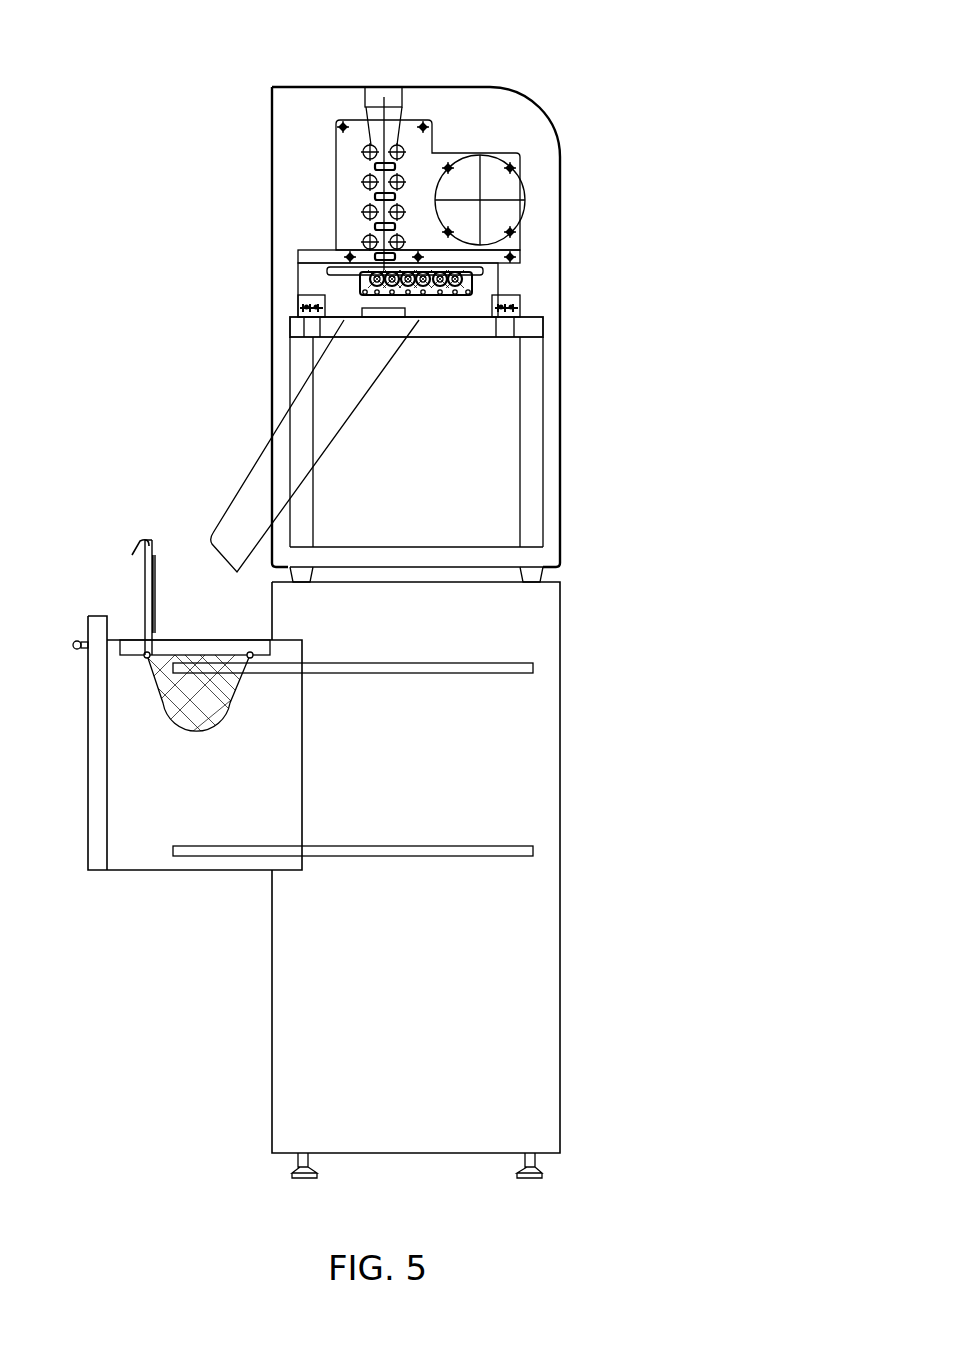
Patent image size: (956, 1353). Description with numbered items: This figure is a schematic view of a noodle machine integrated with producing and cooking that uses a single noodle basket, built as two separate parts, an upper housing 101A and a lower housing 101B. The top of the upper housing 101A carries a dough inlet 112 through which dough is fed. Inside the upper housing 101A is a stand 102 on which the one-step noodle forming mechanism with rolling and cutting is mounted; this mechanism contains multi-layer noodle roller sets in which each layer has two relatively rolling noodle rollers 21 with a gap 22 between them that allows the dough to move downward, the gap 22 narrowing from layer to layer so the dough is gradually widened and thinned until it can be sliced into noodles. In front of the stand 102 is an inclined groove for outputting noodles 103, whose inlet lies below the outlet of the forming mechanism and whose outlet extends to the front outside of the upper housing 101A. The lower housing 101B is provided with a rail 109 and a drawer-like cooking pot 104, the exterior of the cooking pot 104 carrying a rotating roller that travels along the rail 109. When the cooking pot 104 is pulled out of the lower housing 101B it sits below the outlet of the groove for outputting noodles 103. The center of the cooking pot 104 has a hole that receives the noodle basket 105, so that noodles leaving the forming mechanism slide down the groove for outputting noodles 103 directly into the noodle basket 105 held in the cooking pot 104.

The upper housing 101A is at (272, 313).
The lower housing 101B is at (562, 697).
The stand 102 is at (534, 418).
The groove for outputting noodles 103 is at (248, 500).
The cooking pot 104 is at (203, 870).
The noodle basket 105 is at (145, 623).
The rail 109 is at (487, 847).
The dough inlet 112 is at (385, 93).
The noodle roller 21 is at (400, 150).
The gap 22 is at (389, 152).